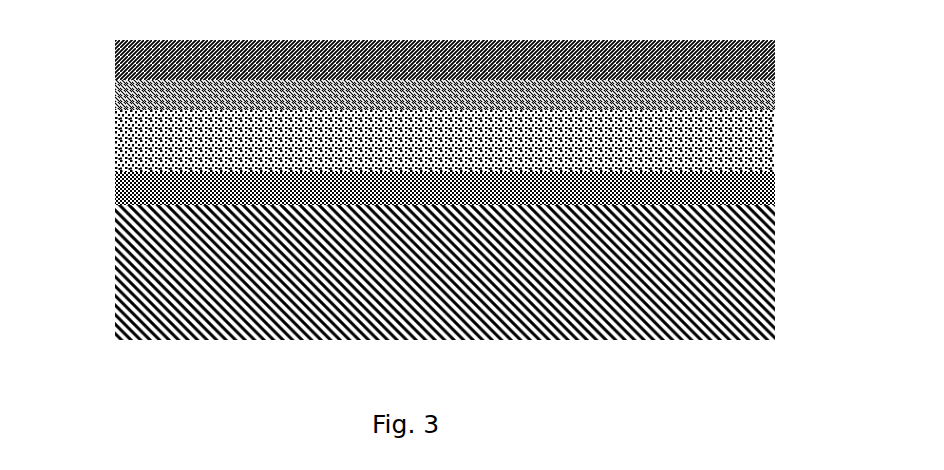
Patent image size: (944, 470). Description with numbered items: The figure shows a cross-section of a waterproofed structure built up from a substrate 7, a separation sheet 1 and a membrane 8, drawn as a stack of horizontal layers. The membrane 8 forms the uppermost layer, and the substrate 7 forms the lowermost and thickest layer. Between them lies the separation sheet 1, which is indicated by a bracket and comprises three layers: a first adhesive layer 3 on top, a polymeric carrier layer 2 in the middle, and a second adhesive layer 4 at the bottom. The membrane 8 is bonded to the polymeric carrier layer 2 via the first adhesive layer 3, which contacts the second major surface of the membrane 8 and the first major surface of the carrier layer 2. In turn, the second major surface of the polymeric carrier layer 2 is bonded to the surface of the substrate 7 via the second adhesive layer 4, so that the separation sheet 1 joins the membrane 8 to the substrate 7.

The separation sheet 1 is at (448, 144).
The polymeric carrier layer 2 is at (775, 147).
The first adhesive layer 3 is at (775, 97).
The second adhesive layer 4 is at (775, 192).
The substrate 7 is at (775, 268).
The membrane 8 is at (775, 62).